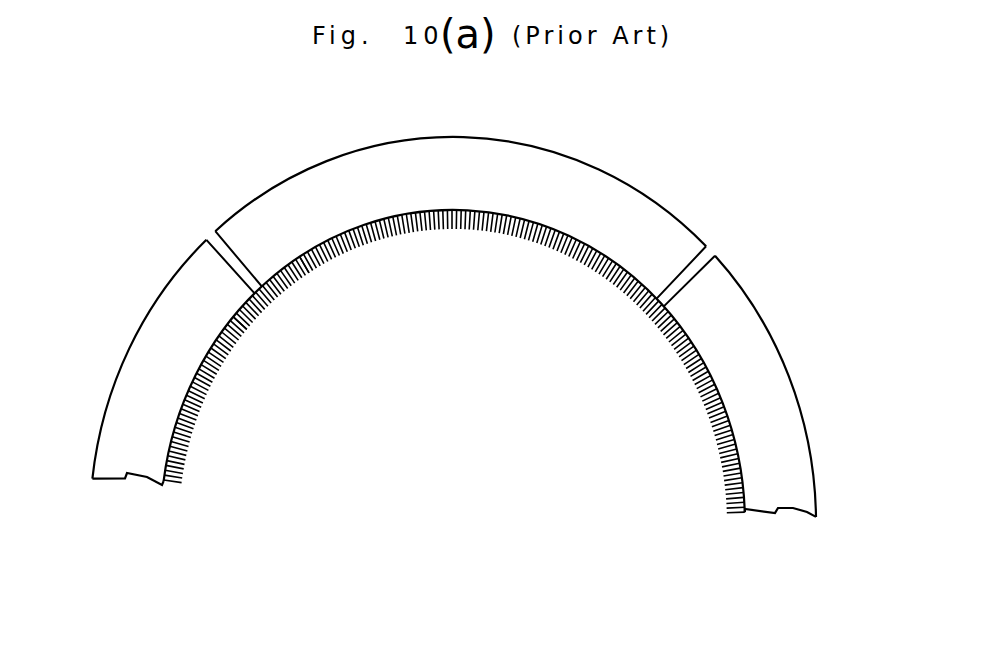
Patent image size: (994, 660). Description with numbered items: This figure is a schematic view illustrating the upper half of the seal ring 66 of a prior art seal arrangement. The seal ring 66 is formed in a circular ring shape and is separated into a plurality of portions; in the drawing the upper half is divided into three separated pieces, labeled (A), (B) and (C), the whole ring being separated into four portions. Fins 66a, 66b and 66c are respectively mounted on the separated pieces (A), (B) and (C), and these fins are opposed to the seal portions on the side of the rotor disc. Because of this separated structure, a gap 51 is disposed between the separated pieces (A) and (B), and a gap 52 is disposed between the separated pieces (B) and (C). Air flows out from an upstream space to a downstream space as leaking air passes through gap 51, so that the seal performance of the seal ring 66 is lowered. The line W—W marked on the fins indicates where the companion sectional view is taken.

The seal ring 66 is at (598, 160).
The fin 66a is at (193, 450).
The fin 66b is at (355, 247).
The fin 66c is at (677, 370).
The gap 51 is at (205, 238).
The gap 52 is at (714, 250).
The line W— W is at (238, 395).